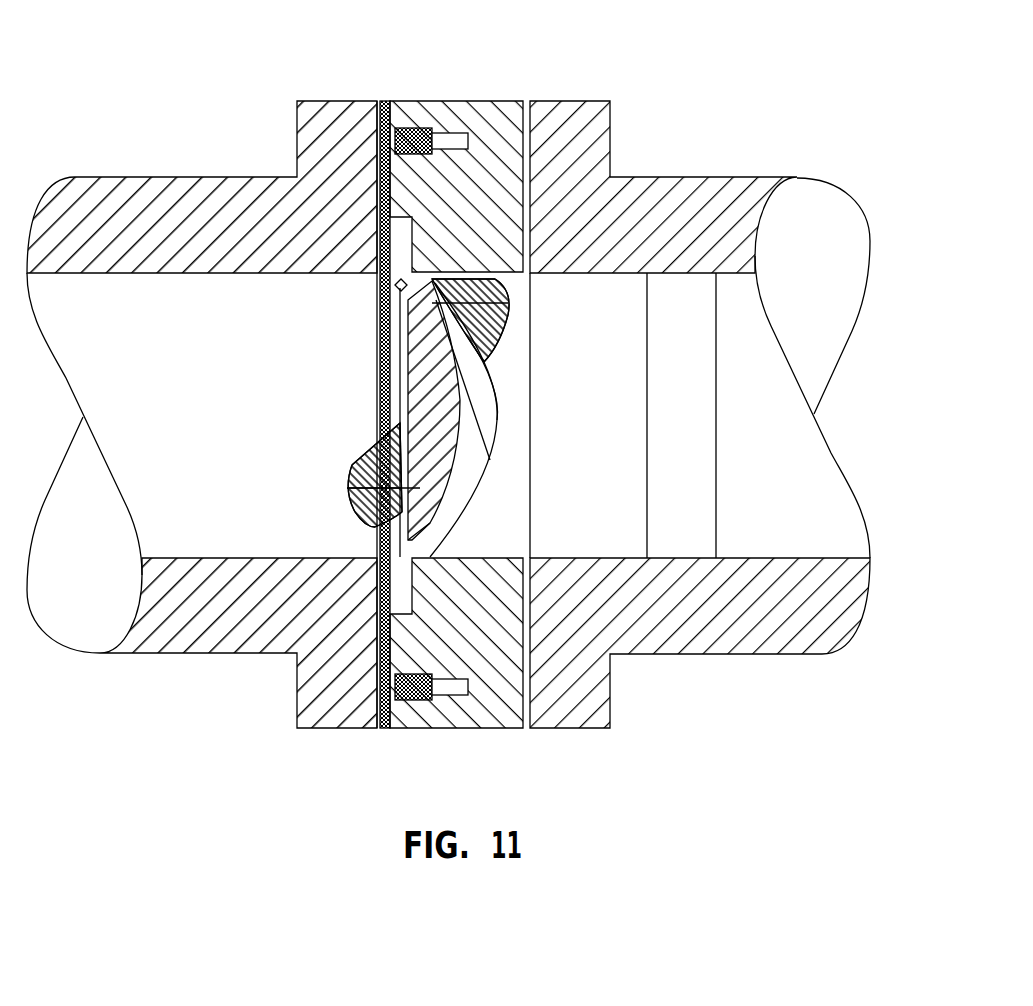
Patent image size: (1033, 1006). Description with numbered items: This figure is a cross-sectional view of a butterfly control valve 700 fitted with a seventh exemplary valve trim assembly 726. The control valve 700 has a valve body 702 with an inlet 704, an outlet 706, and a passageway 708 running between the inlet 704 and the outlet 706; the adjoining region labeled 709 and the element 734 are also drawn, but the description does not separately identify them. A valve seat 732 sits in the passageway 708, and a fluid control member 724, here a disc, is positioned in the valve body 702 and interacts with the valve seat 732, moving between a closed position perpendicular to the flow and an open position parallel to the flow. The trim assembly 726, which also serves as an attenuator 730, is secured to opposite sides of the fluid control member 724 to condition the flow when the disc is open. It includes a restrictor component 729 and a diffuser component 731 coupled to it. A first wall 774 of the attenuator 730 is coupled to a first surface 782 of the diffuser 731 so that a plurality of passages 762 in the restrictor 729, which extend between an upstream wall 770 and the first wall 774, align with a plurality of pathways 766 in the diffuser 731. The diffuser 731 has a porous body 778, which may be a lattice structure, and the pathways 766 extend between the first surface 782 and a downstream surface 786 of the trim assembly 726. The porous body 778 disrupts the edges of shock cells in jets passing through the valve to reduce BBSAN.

The control valve 700 is at (246, 42).
The valve body 702 is at (462, 123).
The inlet 704 is at (377, 340).
The outlet 706 is at (530, 418).
The passageway 708 is at (614, 506).
The inlet pipe 709 is at (207, 343).
The fluid control member 724 is at (492, 425).
The valve trim assembly 726 is at (495, 335).
The restrictor component 729 is at (445, 140).
The attenuator 730 is at (340, 493).
The diffuser component 731 is at (363, 752).
The valve seat 732 is at (395, 285).
The seat ring 734 is at (482, 290).
The plurality of passages 762 is at (508, 300).
The plurality of pathways 766 is at (483, 355).
The second, upstream wall 770 is at (486, 275).
The first wall 774 is at (410, 528).
The porous body 778 is at (490, 287).
The first surface 782 is at (397, 482).
The second, downstream surface 786 is at (493, 340).